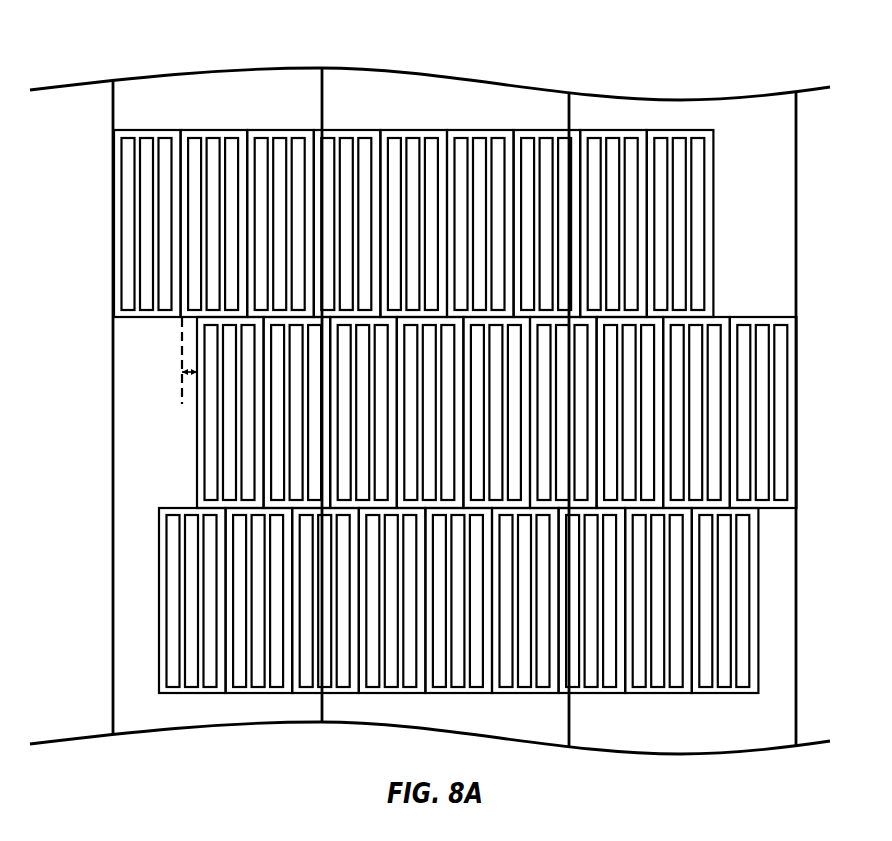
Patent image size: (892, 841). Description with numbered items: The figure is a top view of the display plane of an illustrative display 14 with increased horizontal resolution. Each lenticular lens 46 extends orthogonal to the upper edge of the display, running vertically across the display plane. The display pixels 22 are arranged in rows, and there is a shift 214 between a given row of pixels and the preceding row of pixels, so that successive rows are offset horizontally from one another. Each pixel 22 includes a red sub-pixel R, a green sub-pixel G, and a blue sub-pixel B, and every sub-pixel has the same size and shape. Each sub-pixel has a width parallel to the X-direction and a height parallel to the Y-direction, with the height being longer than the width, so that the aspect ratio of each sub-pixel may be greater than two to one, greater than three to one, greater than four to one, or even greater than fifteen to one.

The display 14 is at (98, 54).
The display pixels 22 is at (455, 358).
The lenticular lens 46 is at (113, 114).
The red sub-pixel R is at (394, 133).
The green sub-pixel G is at (412, 133).
The blue sub-pixel B is at (431, 133).
The shift 214 is at (182, 372).